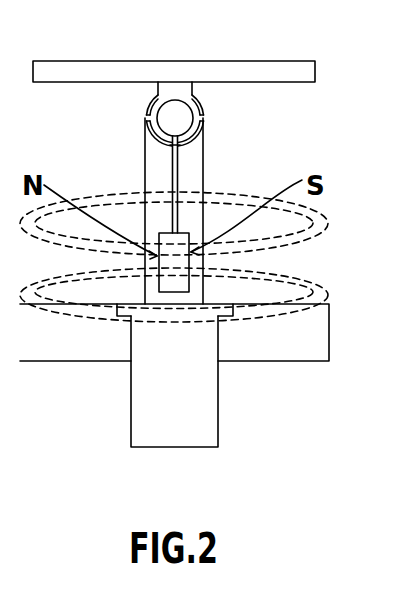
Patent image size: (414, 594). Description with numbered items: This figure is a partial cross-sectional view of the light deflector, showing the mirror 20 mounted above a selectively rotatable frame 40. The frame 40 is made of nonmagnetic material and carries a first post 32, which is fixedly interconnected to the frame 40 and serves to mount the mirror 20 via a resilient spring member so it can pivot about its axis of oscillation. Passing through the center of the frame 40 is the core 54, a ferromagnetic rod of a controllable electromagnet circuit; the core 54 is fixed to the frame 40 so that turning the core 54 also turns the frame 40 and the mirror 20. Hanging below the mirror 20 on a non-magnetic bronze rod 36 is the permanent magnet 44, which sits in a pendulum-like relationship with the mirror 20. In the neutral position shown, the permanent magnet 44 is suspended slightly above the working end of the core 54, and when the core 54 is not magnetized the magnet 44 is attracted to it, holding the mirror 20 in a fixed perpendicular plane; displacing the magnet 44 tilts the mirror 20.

The mirror 20 is at (80, 60).
The first post 32 is at (145, 163).
The non-magnetic bronze rod 36 is at (178, 172).
The permanent magnet 44 is at (158, 275).
The frame 40 is at (313, 320).
The core 54 is at (218, 407).